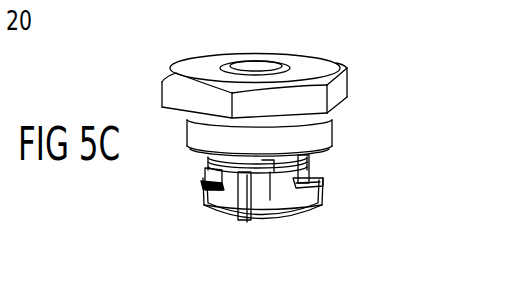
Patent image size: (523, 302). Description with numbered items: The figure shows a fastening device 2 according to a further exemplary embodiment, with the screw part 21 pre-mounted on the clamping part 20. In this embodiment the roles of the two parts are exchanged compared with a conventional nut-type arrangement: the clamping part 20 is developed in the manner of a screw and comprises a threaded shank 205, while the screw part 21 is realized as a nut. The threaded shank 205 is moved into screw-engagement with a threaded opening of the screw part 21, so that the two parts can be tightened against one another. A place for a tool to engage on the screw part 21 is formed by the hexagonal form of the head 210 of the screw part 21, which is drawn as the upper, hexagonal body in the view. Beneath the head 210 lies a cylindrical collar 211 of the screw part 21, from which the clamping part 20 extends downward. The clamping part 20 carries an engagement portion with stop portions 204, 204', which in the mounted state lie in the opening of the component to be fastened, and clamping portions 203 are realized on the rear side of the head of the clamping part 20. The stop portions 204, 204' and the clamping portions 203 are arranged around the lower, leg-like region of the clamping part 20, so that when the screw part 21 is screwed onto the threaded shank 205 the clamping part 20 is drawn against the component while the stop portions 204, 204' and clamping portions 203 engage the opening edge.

The fastening device 2 is at (176, 184).
The clamping part 20 is at (293, 200).
The screw part 21 is at (320, 63).
The clamping portions 203 is at (203, 180).
The stop portions 204 is at (316, 207).
The stop portions 204' is at (322, 207).
The threaded shank 205 is at (259, 64).
The head 210 is at (342, 85).
The cylindrical collar 211 is at (327, 128).